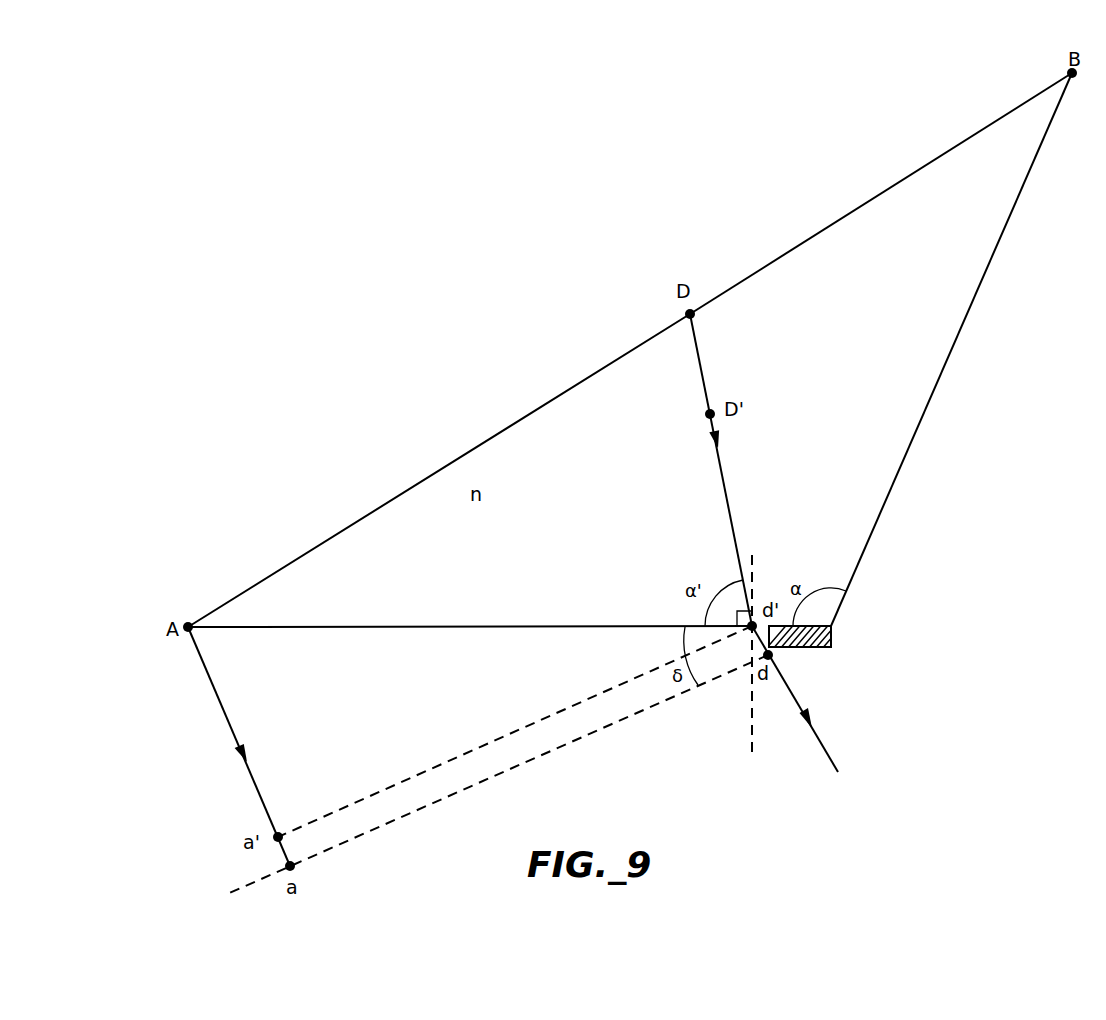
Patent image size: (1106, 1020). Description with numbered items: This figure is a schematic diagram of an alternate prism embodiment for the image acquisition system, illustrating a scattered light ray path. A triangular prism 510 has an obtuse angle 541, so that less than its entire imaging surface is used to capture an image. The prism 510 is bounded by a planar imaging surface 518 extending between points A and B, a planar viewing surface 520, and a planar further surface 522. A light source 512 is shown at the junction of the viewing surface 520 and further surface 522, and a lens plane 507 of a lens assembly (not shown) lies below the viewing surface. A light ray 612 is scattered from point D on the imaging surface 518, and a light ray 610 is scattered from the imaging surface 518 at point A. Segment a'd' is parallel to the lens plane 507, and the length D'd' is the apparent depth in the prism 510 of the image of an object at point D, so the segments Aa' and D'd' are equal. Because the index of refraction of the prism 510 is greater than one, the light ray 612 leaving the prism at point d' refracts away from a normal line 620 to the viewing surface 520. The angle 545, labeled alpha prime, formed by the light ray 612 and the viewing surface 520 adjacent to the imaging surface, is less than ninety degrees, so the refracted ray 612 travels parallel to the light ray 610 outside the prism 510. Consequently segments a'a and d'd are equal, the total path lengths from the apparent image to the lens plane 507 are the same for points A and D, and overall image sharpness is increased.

The lens plane 507 is at (243, 887).
The triangular prism 510 is at (1023, 122).
The light source 512 is at (803, 650).
The planar imaging surface 518 is at (322, 542).
The planar viewing surface 520 is at (268, 632).
The planar further surface 522 is at (1005, 222).
The obtuse angle 541 is at (822, 590).
The angle α' 545 is at (702, 613).
The light ray 610 is at (222, 710).
The light ray 612 is at (725, 472).
The normal line 620 is at (753, 718).